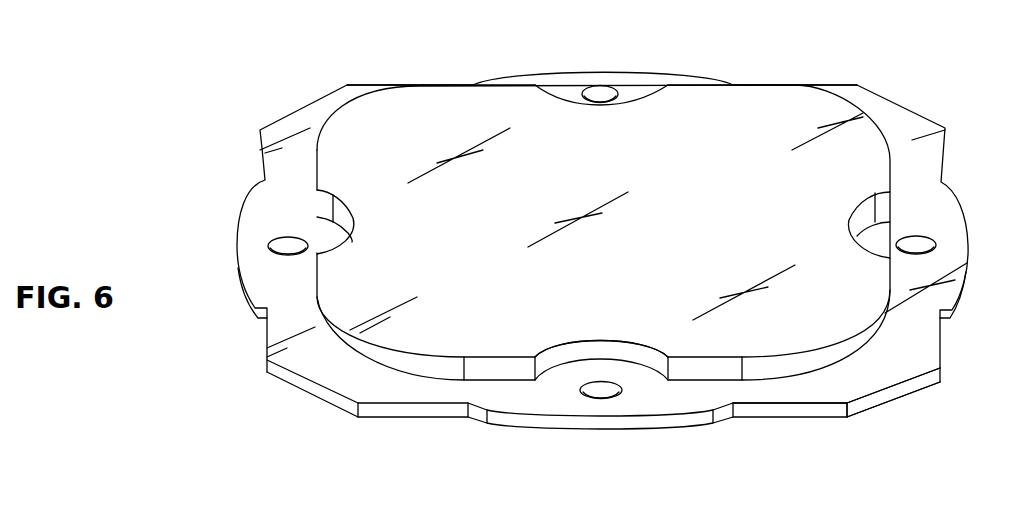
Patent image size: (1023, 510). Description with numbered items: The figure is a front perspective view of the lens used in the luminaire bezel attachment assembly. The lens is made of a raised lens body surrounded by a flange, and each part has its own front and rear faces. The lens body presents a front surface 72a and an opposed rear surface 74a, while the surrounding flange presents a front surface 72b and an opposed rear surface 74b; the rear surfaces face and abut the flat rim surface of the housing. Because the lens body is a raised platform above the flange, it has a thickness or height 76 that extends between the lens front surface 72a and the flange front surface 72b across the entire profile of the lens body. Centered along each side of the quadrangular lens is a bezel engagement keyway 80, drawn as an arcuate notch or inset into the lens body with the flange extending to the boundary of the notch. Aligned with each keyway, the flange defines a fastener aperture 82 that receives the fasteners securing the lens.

The front surface of the lens body 72a is at (638, 248).
The front surface of the flange 72b is at (911, 121).
The rear surface of the lens body 74a is at (775, 386).
The rear surface of the flange 74b is at (866, 411).
The thickness or height 76 is at (860, 335).
The bezel engagement keyway 80 is at (561, 362).
The fastener aperture 82 is at (611, 399).